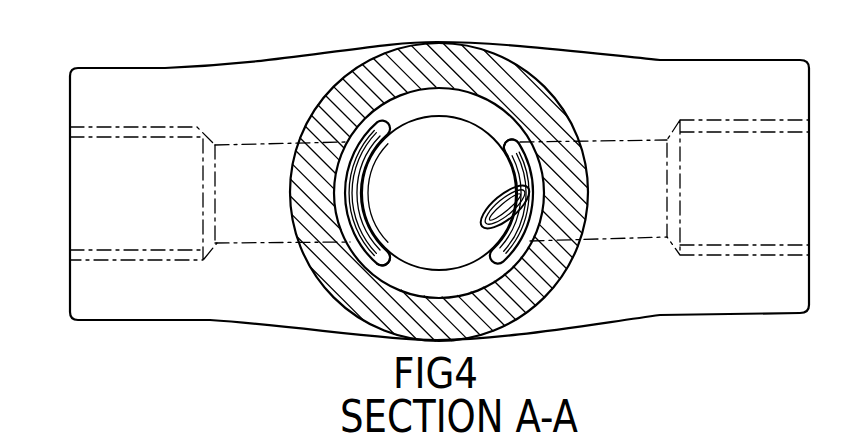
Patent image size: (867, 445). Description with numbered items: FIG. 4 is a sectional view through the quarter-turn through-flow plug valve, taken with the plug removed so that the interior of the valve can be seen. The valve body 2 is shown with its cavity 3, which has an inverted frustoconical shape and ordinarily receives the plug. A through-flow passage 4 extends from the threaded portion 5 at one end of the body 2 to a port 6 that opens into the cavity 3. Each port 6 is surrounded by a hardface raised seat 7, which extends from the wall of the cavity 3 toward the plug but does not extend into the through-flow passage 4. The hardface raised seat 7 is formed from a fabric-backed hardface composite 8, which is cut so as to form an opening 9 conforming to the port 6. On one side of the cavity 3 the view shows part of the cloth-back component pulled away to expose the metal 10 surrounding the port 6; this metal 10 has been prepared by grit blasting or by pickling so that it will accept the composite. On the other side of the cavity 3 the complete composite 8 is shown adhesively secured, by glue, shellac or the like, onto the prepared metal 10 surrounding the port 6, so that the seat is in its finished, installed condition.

The body 2 is at (540, 285).
The cavity 3 is at (446, 209).
The through-flow passage 4 is at (270, 217).
The threaded portion 5 is at (80, 132).
The port 6 is at (357, 178).
The hardface raised seat 7 is at (389, 232).
The fabric-backed hardface composite 8 is at (478, 213).
The opening 9 is at (493, 243).
The metal 10 is at (515, 146).